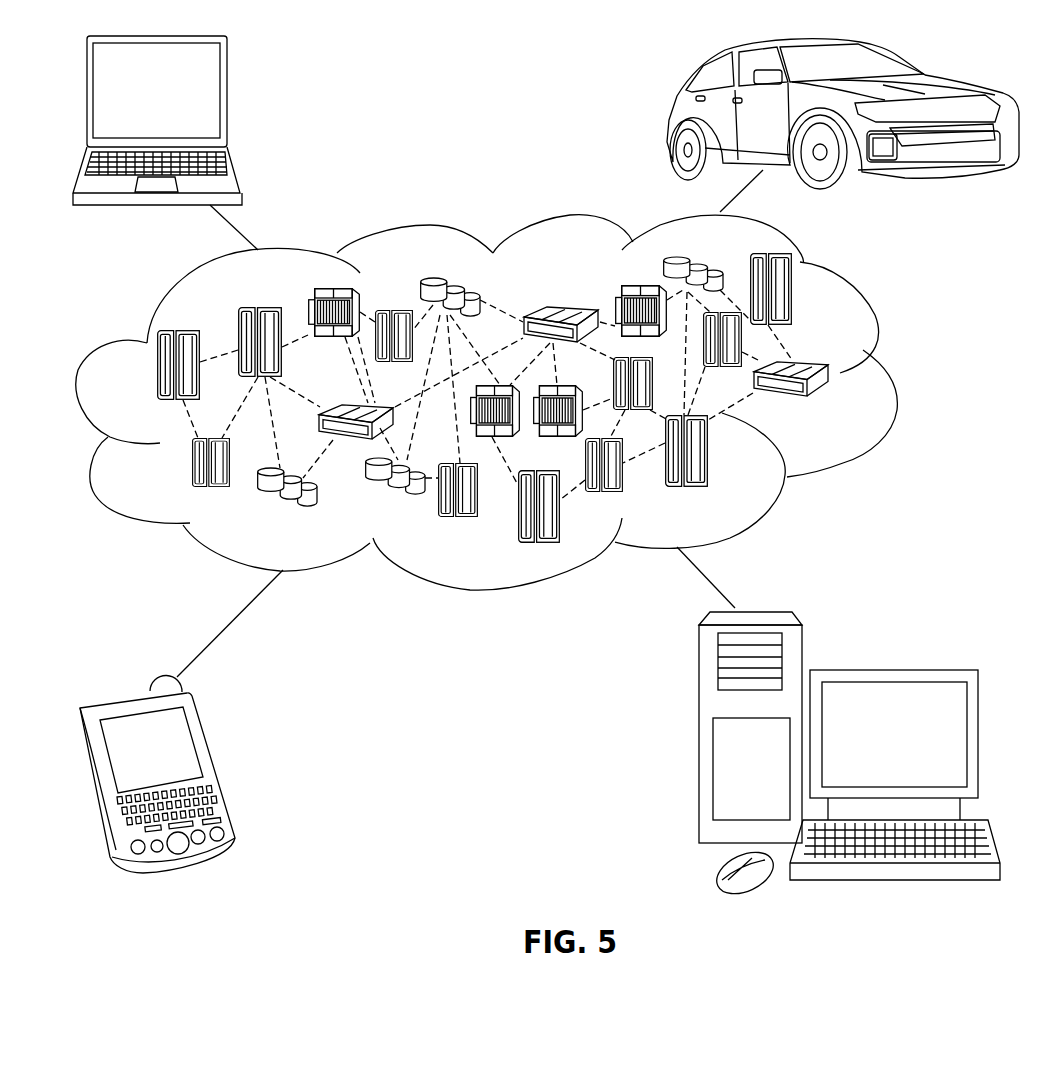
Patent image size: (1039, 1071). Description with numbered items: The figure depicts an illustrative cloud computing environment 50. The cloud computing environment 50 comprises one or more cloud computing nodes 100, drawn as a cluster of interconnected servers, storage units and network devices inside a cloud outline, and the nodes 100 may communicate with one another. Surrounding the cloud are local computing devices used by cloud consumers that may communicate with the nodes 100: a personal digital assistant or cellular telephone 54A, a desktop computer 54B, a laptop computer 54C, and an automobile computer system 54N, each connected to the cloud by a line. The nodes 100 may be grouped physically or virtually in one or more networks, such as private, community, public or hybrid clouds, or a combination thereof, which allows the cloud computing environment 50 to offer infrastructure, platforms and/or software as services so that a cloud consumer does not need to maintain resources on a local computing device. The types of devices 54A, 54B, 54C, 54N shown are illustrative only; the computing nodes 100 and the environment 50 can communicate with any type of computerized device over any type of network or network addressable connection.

The cloud computing environment 50 is at (893, 375).
The cloud computing nodes 100 is at (838, 408).
The personal digital assistant or cellular telephone 54A is at (217, 763).
The desktop computer 54B is at (890, 668).
The laptop computer 54C is at (232, 100).
The automobile computer system 54N is at (668, 113).